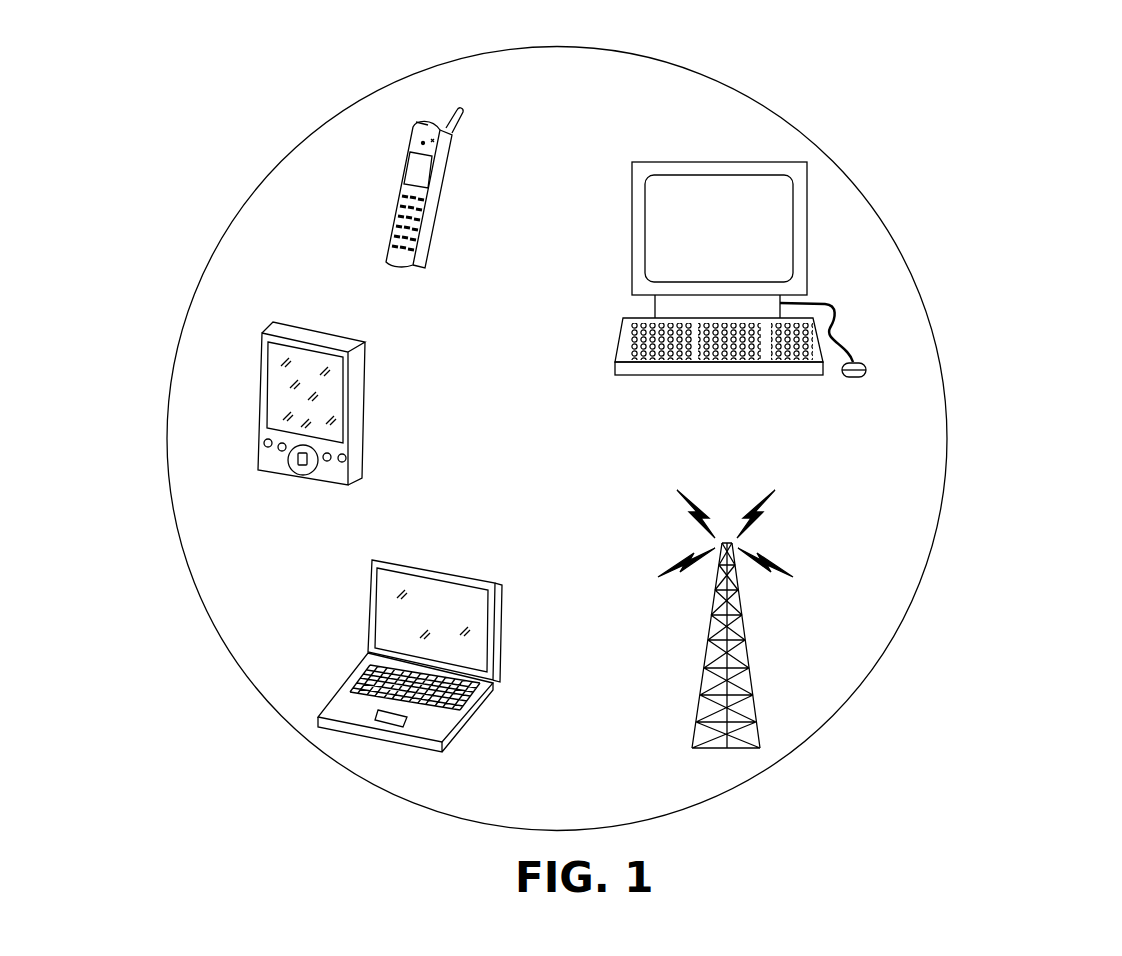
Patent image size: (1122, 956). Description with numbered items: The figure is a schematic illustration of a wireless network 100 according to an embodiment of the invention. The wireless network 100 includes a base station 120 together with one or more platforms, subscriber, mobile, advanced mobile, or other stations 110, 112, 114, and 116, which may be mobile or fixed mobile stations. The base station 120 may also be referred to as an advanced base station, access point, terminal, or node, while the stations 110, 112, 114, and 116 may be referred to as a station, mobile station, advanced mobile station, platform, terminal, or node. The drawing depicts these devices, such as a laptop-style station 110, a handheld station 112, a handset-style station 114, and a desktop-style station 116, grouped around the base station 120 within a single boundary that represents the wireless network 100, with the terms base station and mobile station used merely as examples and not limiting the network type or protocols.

The wireless network 100 is at (1008, 94).
The station 110 is at (440, 568).
The station 112 is at (363, 428).
The station 114 is at (397, 170).
The station 116 is at (693, 162).
The base station 120 is at (750, 678).